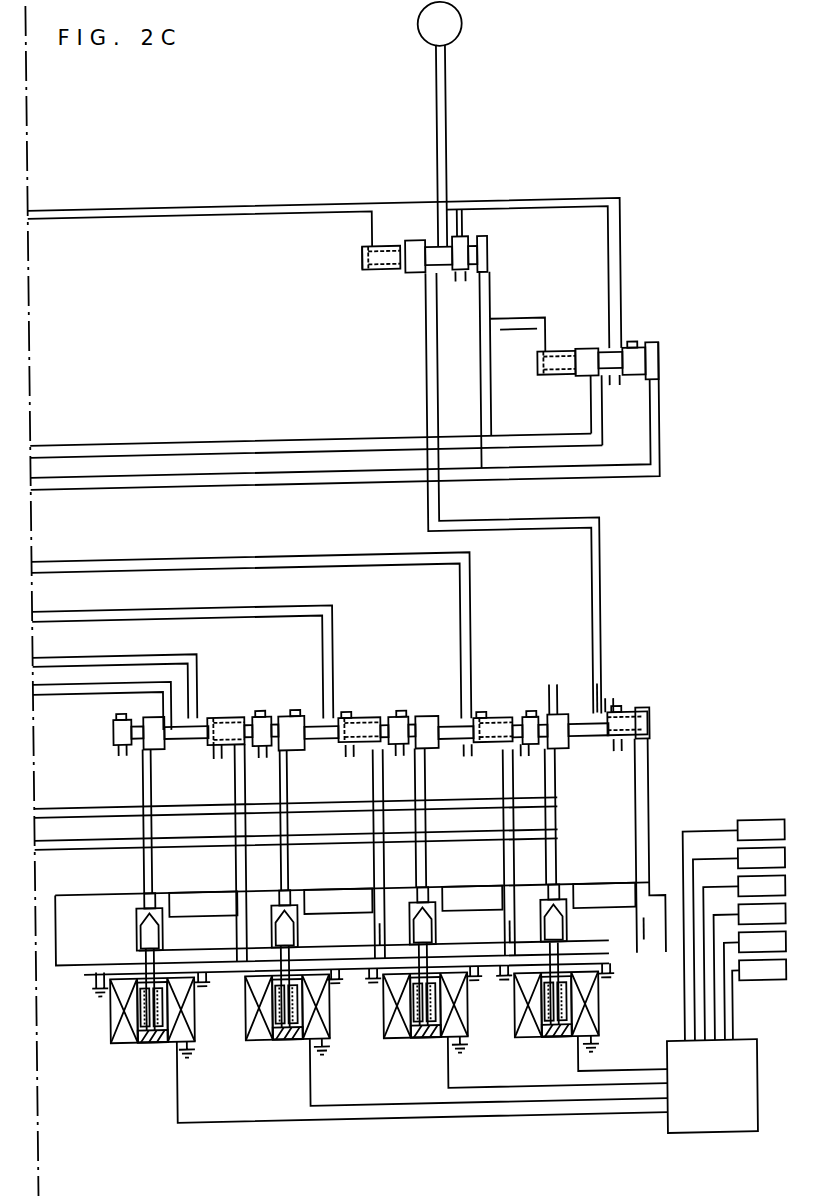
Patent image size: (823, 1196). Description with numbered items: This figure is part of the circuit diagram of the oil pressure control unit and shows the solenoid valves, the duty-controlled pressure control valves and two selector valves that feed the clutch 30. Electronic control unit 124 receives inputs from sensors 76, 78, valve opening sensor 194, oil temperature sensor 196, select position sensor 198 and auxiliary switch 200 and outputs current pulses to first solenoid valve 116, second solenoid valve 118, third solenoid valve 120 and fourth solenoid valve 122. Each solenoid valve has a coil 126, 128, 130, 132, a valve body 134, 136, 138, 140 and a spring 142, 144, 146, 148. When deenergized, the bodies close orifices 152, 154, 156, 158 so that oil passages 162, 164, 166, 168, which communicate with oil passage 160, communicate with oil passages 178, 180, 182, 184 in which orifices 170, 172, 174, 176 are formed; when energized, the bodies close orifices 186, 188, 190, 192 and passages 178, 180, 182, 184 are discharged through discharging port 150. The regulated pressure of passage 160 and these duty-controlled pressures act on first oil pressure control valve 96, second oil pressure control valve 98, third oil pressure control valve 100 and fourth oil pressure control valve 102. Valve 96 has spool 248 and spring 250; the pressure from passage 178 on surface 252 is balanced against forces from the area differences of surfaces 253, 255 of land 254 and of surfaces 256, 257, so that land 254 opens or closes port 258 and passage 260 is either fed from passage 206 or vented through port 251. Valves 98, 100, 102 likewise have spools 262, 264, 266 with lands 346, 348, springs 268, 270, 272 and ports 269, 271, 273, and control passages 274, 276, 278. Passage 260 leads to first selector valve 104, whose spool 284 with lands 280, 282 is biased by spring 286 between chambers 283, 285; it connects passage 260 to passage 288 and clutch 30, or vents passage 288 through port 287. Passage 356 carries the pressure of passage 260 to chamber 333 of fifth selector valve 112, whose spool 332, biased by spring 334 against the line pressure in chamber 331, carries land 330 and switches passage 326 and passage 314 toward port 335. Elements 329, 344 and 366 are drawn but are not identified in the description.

The clutch 30 is at (463, 44).
The oil passage 288 is at (451, 128).
The land 282 is at (465, 238).
The land 280 is at (405, 250).
The first selector valve 104 is at (417, 267).
The oil pressure chamber 283 is at (491, 262).
The oil pressure chamber 285 is at (366, 272).
The spool 284 is at (418, 276).
The spring 286 is at (392, 272).
The port 287 is at (472, 284).
The oil passage 314 is at (138, 214).
The spool land 329 is at (590, 357).
The land 330 is at (636, 355).
The fifth selector valve 112 is at (601, 364).
The oil passage 356 is at (540, 343).
The oil pressure chamber 333 is at (542, 380).
The spring 334 is at (563, 382).
The oil pressure chamber 331 is at (661, 376).
The port 335 is at (648, 392).
The oil passage 326 is at (583, 440).
The spool 332 is at (604, 420).
The oil passage 260 is at (429, 380).
The conduit 344 is at (661, 470).
The oil passage 274 is at (470, 604).
The oil passage 276 is at (332, 630).
The oil passage 278 is at (196, 652).
The spool 266 is at (150, 726).
The valve 366 is at (130, 729).
The fourth oil pressure control valve 102 is at (236, 722).
The spring 272 is at (212, 716).
The land 348 is at (266, 716).
The spool 264 is at (289, 710).
The port 273 is at (210, 748).
The third oil pressure control valve 100 is at (380, 726).
The spring 270 is at (356, 719).
The land 346 is at (425, 719).
The spool 262 is at (420, 719).
The port 271 is at (316, 752).
The second oil pressure control valve 98 is at (520, 715).
The spring 268 is at (512, 722).
The pressure receiving surface 256 is at (550, 722).
The pressure receiving surface 257 is at (530, 722).
The pressure receiving surface 255 is at (553, 700).
The port 269 is at (482, 750).
The first oil pressure control valve 96 is at (647, 695).
The spring 250 is at (646, 730).
The pressure receiving surface 252 is at (637, 718).
The pressure receiving surface 253 is at (612, 712).
The spool 248 is at (600, 700).
The port 251 is at (646, 758).
The port 258 is at (562, 755).
The land 254 is at (572, 792).
The orifice 186 is at (602, 890).
The oil passage 206 is at (66, 803).
The oil passage 160 is at (58, 845).
The oil passage 162 is at (558, 856).
The oil passage 168 is at (158, 864).
The orifice 192 is at (160, 892).
The oil passage 166 is at (292, 866).
The orifice 190 is at (292, 893).
The oil passage 164 is at (433, 868).
The orifice 188 is at (430, 893).
The orifice 176 is at (192, 900).
The orifice 174 is at (320, 902).
The orifice 172 is at (452, 905).
The orifice 170 is at (584, 915).
The orifice 158 is at (160, 946).
The orifice 156 is at (294, 946).
The orifice 154 is at (432, 947).
The orifice 152 is at (563, 946).
The oil passage 184 is at (242, 930).
The oil passage 182 is at (378, 932).
The oil passage 180 is at (506, 934).
The oil passage 178 is at (640, 934).
The discharging port 150 is at (72, 958).
The fourth solenoid valve 122 is at (373, 1031).
The coil 132 is at (123, 1035).
The spring 148 is at (153, 1038).
The valve body 140 is at (136, 1070).
The third solenoid valve 120 is at (442, 1023).
The coil 130 is at (260, 1032).
The spring 146 is at (289, 1036).
The valve body 138 is at (272, 1068).
The second solenoid valve 118 is at (510, 1022).
The coil 128 is at (397, 1030).
The spring 144 is at (427, 1034).
The valve body 136 is at (404, 1065).
The coil 126 is at (484, 1038).
The first solenoid valve 116 is at (579, 1009).
The valve body 134 is at (531, 1027).
The spring 142 is at (556, 1028).
The electronic control unit 124 is at (660, 1060).
The sensor 76 is at (734, 928).
The sensor 78 is at (740, 942).
The valve opening sensor 194 is at (745, 956).
The oil temperature sensor 196 is at (750, 970).
The select position sensor 198 is at (755, 983).
The auxiliary switch 200 is at (759, 997).